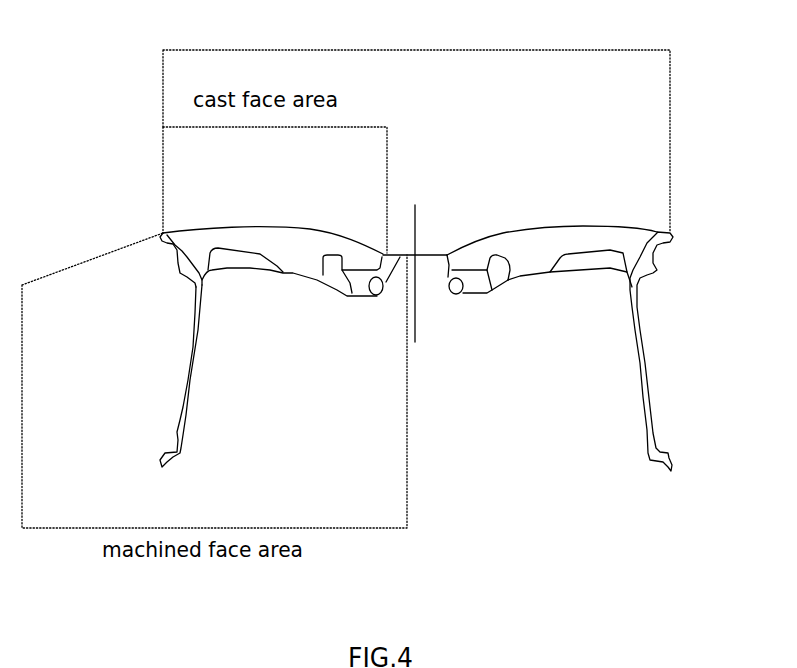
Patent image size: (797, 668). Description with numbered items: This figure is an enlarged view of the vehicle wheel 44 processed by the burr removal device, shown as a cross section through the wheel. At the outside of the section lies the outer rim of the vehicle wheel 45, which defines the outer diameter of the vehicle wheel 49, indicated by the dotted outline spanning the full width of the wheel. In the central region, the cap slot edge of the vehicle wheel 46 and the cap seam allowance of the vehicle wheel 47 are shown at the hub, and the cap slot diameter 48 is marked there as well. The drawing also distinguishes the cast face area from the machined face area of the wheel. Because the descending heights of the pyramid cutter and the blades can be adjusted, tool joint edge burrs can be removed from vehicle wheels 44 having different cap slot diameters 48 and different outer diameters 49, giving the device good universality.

The vehicle wheel 44 is at (183, 373).
The outer rim of the vehicle wheel 45 is at (163, 233).
The cap slot edge of the vehicle wheel 46 is at (449, 262).
The cap seam allowance of the vehicle wheel 47 is at (450, 266).
The cap slot diameter 48 is at (398, 259).
The outer diameter of the vehicle wheel 49 is at (400, 24).